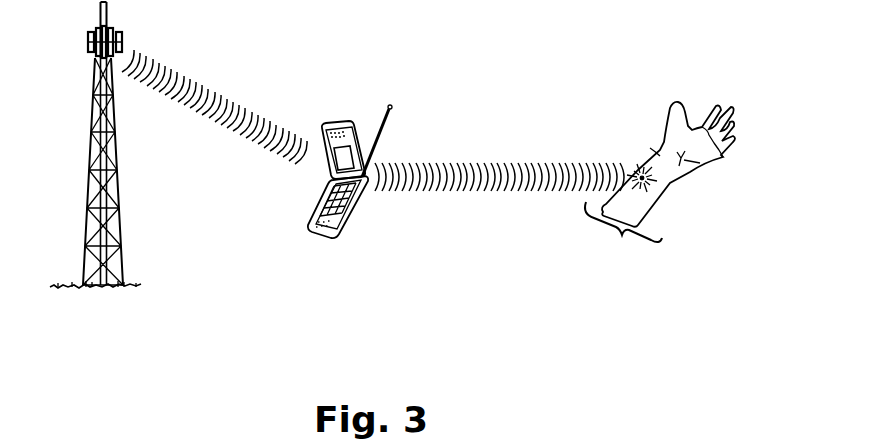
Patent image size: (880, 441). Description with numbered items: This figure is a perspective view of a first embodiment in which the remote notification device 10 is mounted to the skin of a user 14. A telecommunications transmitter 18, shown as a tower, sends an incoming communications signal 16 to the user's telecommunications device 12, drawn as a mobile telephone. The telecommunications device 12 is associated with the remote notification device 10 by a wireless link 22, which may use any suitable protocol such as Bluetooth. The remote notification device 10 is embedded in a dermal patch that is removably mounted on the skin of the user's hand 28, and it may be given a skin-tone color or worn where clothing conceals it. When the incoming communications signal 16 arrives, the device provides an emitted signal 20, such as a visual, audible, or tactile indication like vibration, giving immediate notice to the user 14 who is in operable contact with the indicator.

The remote notification device 10 is at (640, 175).
The telecommunications device 12 is at (340, 117).
The user 14 is at (697, 119).
The incoming communications signal 16 is at (197, 72).
The telecommunications transmitter 18 is at (94, 104).
The emitted signal 20 is at (623, 232).
The wireless link 22 is at (463, 161).
The user's hand 28 is at (696, 162).